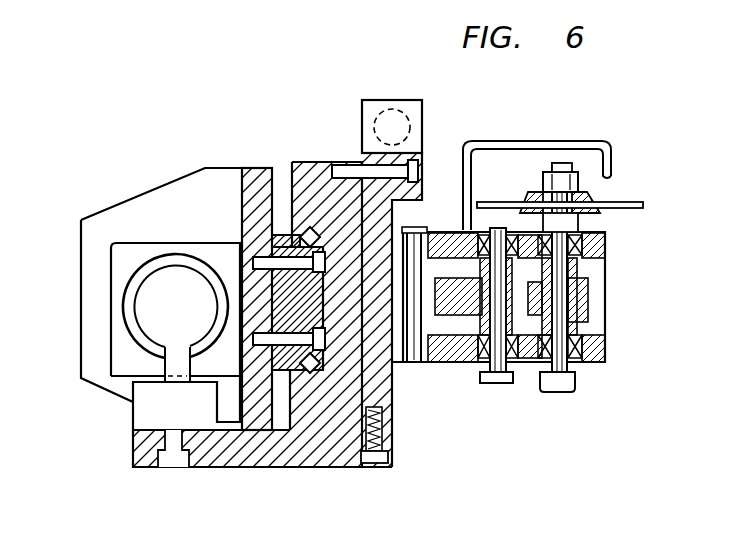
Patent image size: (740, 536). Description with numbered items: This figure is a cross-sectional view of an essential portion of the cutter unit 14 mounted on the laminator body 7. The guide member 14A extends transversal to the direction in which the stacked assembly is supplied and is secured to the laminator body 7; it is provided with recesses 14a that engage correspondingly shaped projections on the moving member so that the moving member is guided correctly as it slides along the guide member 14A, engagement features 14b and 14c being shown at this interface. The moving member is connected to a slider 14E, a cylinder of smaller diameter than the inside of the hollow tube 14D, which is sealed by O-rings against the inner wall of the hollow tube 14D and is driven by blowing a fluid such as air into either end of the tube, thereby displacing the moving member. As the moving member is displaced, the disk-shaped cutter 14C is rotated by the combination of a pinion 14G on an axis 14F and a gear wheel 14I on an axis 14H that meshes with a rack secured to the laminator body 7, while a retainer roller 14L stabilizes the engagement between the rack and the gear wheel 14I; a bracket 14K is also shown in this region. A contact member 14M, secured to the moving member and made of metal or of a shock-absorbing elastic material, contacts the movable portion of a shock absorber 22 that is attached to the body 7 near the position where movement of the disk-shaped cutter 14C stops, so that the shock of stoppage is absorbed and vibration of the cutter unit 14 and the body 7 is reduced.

The cutter unit 14 is at (301, 84).
The laminator body 7 is at (247, 170).
The guide member 14A is at (281, 235).
The recesses 14a is at (242, 250).
The pin 14b is at (312, 230).
The ball 14c is at (305, 232).
The disk-shaped cutter 14C is at (643, 205).
The hollow tube 14D is at (150, 248).
The slider 14E is at (148, 292).
The axis 14F is at (576, 384).
The pinion 14G is at (600, 300).
The axis 14H is at (500, 384).
The gear wheel 14I is at (473, 340).
The bracket 14K is at (562, 143).
The retainer roller 14L is at (427, 300).
The contact member 14M is at (368, 106).
The shock absorber 22 is at (412, 120).